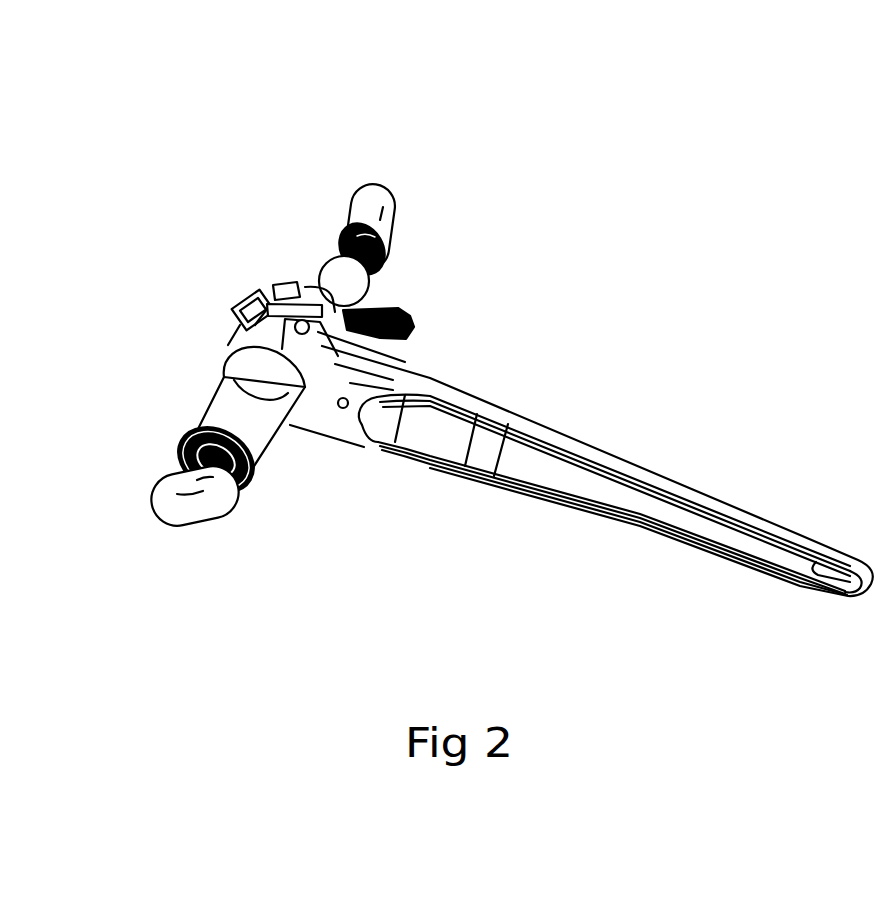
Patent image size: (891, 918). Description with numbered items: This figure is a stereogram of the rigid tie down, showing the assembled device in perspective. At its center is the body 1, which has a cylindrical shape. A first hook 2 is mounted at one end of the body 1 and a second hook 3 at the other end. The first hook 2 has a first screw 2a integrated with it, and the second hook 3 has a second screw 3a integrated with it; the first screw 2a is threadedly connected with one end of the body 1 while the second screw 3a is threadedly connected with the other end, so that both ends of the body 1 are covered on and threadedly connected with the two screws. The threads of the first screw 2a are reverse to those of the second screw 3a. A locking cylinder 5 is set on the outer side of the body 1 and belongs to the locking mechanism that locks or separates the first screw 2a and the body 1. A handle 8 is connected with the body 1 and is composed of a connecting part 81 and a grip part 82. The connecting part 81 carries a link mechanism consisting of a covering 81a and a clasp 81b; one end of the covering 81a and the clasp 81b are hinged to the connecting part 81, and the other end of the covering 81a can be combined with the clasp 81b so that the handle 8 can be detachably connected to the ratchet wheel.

The body 1 is at (310, 282).
The first hook 2 is at (185, 508).
The first screw 2a is at (188, 477).
The second hook 3 is at (383, 198).
The second screw 3a is at (390, 267).
The locking cylinder 5 is at (235, 418).
The handle 8 is at (660, 512).
The connecting part 81 is at (332, 408).
The covering 81a is at (243, 351).
The clasp 81b is at (363, 305).
The grip part 82 is at (590, 450).